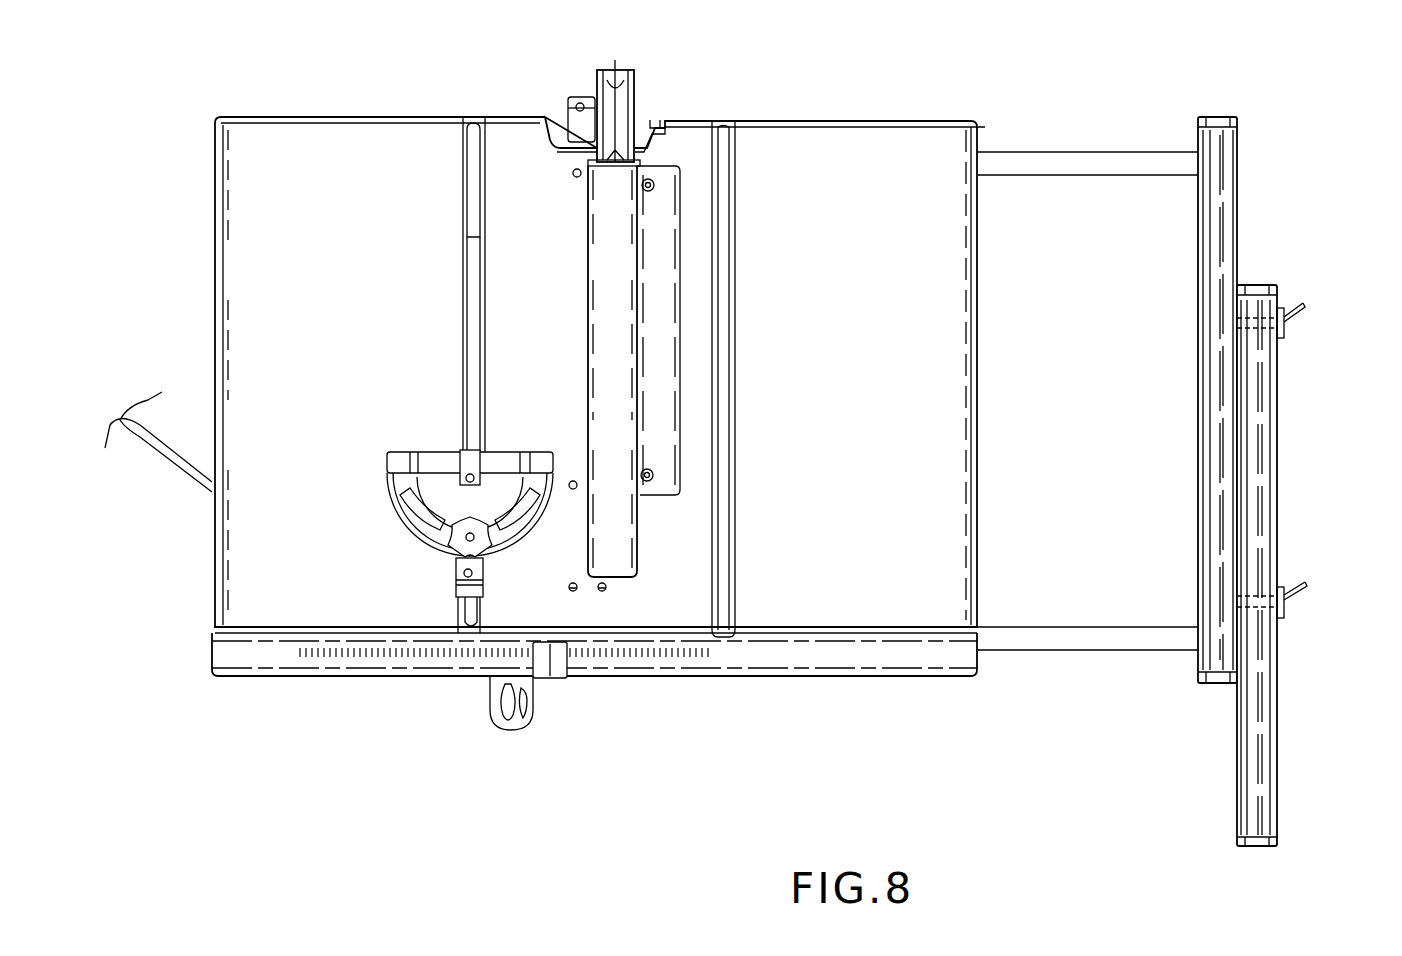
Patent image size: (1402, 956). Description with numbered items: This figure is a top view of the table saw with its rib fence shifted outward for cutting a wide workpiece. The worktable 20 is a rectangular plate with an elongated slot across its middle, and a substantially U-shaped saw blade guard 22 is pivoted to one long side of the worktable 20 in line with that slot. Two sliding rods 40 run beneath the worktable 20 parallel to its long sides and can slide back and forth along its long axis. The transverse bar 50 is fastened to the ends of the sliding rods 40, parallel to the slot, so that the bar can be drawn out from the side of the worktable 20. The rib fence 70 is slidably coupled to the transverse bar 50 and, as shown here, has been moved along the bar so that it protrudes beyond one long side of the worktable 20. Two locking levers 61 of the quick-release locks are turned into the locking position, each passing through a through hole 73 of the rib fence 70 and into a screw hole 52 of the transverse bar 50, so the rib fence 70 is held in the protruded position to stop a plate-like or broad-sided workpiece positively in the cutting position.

The worktable 20 is at (338, 142).
The saw blade guard 22 is at (625, 235).
The sliding rods 40 is at (1093, 150).
The transverse bar 50 is at (1205, 440).
The screw hole 52 is at (1224, 323).
The locking lever 61 is at (1298, 312).
The rib fence 70 is at (1303, 526).
The through hole 73 is at (1253, 317).